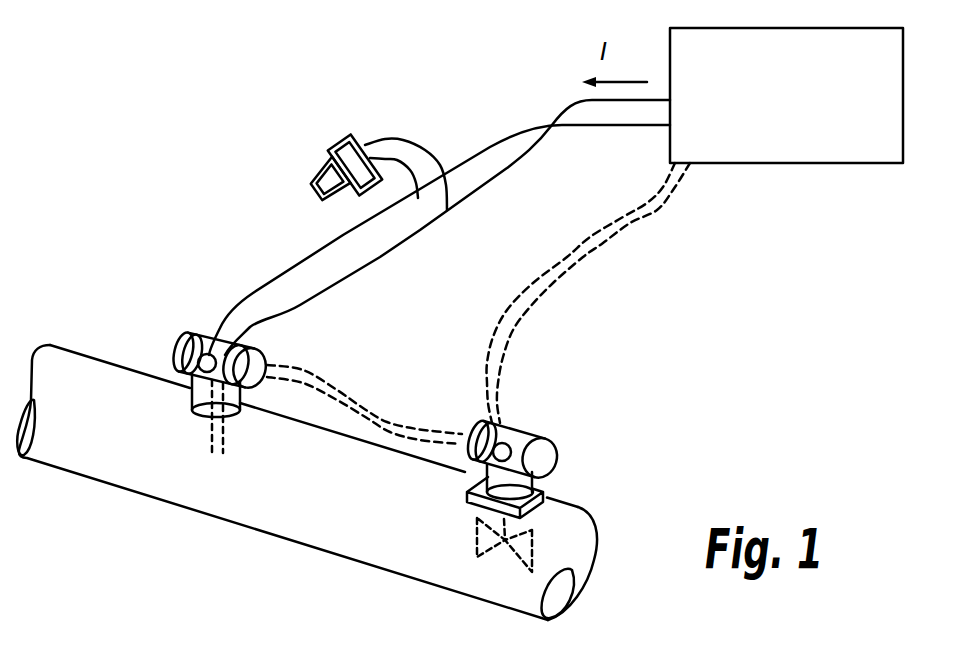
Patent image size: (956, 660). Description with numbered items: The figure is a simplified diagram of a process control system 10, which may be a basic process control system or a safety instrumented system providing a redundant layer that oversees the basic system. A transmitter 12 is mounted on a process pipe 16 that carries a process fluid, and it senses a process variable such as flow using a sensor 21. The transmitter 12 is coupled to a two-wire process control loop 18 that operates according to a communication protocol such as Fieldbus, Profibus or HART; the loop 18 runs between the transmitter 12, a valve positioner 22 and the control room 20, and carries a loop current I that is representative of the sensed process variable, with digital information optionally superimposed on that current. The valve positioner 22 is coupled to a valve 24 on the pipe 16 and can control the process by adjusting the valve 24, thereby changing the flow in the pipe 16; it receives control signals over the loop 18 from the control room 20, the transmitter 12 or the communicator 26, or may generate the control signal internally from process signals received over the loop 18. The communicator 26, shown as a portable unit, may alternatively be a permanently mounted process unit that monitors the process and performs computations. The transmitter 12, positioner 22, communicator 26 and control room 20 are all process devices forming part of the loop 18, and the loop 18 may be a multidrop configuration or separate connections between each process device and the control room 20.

The process control system 10 is at (208, 238).
The transmitter 12 is at (203, 331).
The process pipe 16 is at (107, 482).
The two-wire process control loop 18 is at (342, 242).
The control room 20 is at (722, 163).
The sensor 21 is at (223, 437).
The valve positioner 22 is at (500, 425).
The valve 24 is at (477, 533).
The communicator 26 is at (333, 137).